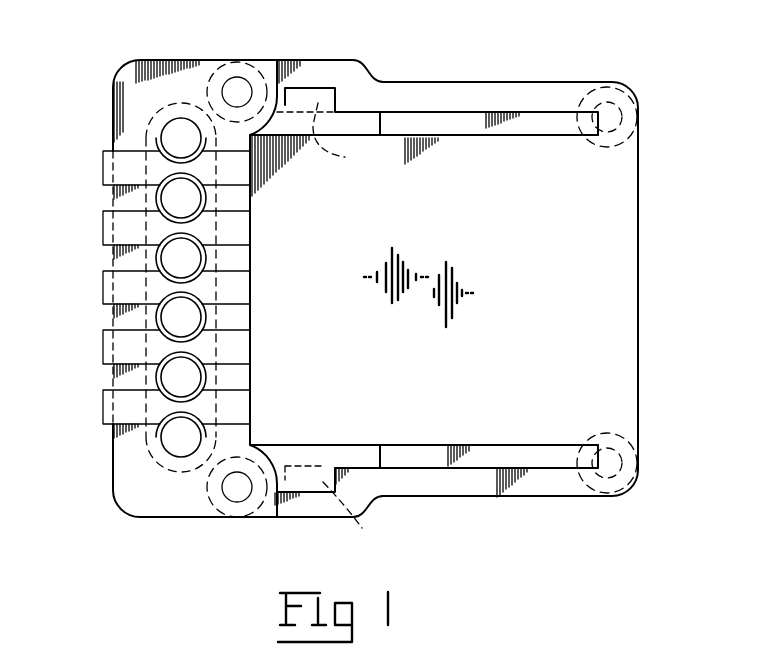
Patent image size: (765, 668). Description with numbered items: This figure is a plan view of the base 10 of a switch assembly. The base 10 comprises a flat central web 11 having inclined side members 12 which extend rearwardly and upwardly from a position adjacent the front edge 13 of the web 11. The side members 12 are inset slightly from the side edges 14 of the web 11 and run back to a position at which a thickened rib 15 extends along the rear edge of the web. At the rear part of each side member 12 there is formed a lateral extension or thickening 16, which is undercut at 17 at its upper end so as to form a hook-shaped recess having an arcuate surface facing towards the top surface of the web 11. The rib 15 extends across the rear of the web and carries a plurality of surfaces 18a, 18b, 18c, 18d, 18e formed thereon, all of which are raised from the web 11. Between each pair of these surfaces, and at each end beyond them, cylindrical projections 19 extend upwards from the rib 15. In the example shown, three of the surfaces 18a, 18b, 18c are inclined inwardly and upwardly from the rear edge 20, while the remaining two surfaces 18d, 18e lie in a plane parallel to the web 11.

The base 10 is at (124, 508).
The flat central web 11 is at (558, 268).
The inclined side members 12 is at (477, 128).
The front edge 13 is at (628, 325).
The side edges 14 is at (486, 84).
The thickened rib 15 is at (125, 452).
The lateral extension or thickening 16 is at (283, 58).
The undercut 17 is at (351, 327).
The surface 18a is at (110, 407).
The surface 18b is at (110, 347).
The surface 18c is at (110, 288).
The surface 18d is at (110, 228).
The surface 18e is at (110, 168).
The cylindrical projections 19 is at (180, 135).
The rear edge 20 is at (110, 480).